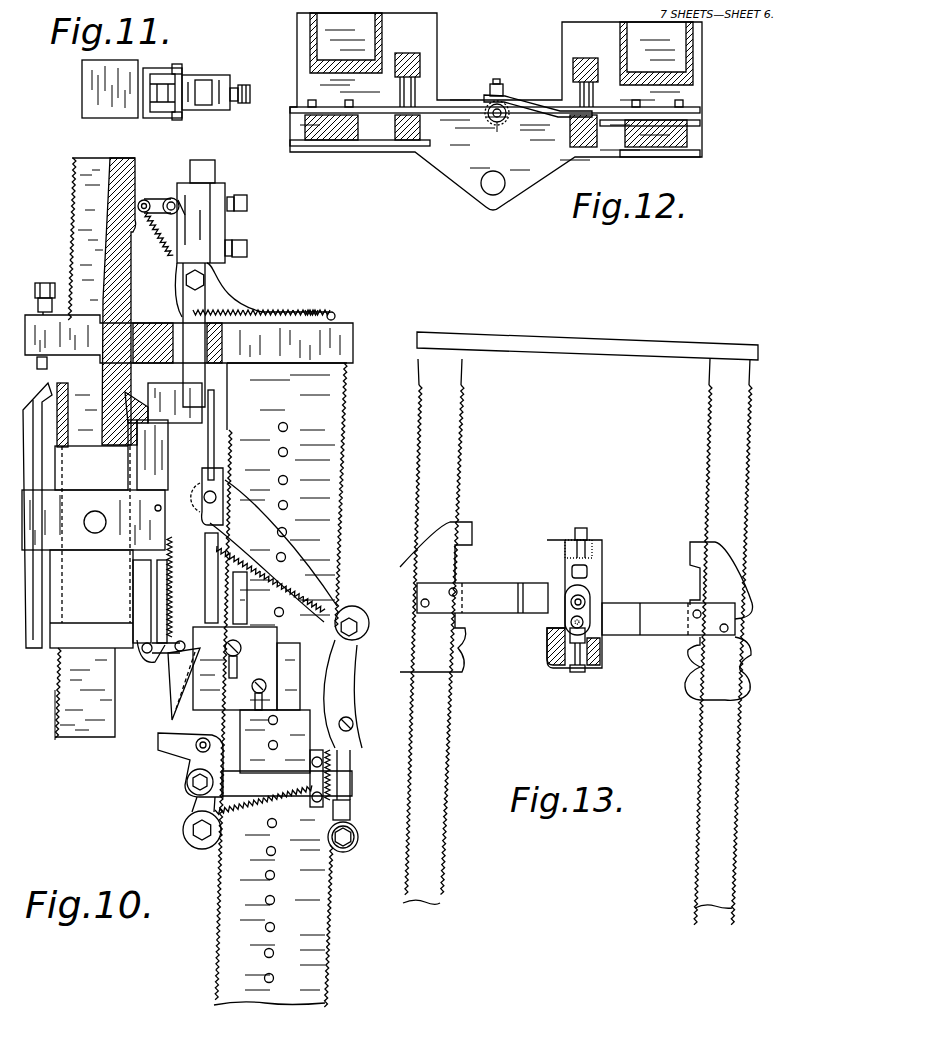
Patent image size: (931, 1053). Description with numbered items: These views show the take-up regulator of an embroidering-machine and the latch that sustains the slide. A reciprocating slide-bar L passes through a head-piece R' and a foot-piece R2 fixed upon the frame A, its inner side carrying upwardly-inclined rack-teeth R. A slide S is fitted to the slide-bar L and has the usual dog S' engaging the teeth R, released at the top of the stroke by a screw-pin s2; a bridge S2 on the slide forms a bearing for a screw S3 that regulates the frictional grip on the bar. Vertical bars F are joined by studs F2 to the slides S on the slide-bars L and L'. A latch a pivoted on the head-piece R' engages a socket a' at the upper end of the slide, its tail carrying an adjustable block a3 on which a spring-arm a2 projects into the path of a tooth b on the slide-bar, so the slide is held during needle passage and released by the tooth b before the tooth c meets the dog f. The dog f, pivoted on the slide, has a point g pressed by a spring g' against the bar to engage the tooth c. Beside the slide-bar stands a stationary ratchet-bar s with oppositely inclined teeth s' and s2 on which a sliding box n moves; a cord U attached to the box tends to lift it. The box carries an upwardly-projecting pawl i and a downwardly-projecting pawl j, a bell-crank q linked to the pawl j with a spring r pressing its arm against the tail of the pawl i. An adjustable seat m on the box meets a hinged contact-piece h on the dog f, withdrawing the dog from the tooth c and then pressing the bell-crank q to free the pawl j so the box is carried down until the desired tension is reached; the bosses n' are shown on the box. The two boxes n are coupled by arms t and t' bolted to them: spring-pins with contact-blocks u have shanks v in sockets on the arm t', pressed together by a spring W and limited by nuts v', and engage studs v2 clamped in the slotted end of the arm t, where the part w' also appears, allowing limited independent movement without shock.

In FIG. 11, the slide-bar L is at (93, 89).
In FIG. 12, the slide-bar L is at (606, 135).
In FIG. 10, the slide-bar L is at (95, 467).
In FIG. 11, the adjustable block a3 is at (208, 77).
In FIG. 10, the adjustable block a3 is at (198, 200).
In FIG. 10, the spring-arm a2 is at (150, 198).
In FIG. 10, the latch a is at (255, 335).
In FIG. 10, the socket a' is at (175, 393).
In FIG. 10, the tooth b is at (136, 228).
In FIG. 10, the tooth c is at (136, 393).
In FIG. 13, the rack-teeth R is at (604, 350).
In FIG. 10, the rack-teeth R is at (33, 714).
In FIG. 10, the head-piece R' is at (191, 324).
In FIG. 12, the foot-piece R2 is at (447, 175).
In FIG. 12, the frame A is at (310, 57).
In FIG. 12, the vertical bar F is at (582, 68).
In FIG. 12, the stud F2 is at (418, 88).
In FIG. 12, the arm t is at (538, 92).
In FIG. 13, the arm t is at (668, 601).
In FIG. 12, the arm t' is at (495, 136).
In FIG. 13, the arm t' is at (482, 580).
In FIG. 12, the contact-block u is at (507, 124).
In FIG. 13, the contact-block u is at (582, 568).
In FIG. 12, the shank v is at (493, 138).
In FIG. 13, the shank v is at (560, 664).
In FIG. 13, the nut v' is at (596, 685).
In FIG. 12, the stud v2 is at (493, 100).
In FIG. 13, the stud v2 is at (568, 620).
In FIG. 13, the slot w' is at (599, 602).
In FIG. 13, the spring W is at (602, 660).
In FIG. 12, the slide-bar L' is at (362, 155).
In FIG. 13, the ratchet-bar s is at (577, 642).
In FIG. 10, the ratchet-bar s is at (280, 684).
In FIG. 10, the teeth s' is at (347, 685).
In FIG. 10, the teeth s2 is at (42, 283).
In FIG. 10, the slide S is at (91, 599).
In FIG. 10, the dog S' is at (30, 531).
In FIG. 10, the bridge S2 is at (93, 540).
In FIG. 10, the screw S3 is at (97, 510).
In FIG. 10, the dog f is at (162, 443).
In FIG. 10, the cord U is at (215, 412).
In FIG. 13, the sliding box n is at (588, 602).
In FIG. 10, the sliding box n is at (283, 719).
In FIG. 10, the clamp arm n' is at (262, 658).
In FIG. 10, the pawl j is at (347, 805).
In FIG. 10, the contact-piece h is at (160, 668).
In FIG. 10, the adjustable seat m is at (192, 650).
In FIG. 10, the pawl i is at (212, 565).
In FIG. 10, the point g is at (229, 590).
In FIG. 10, the spring g' is at (287, 783).
In FIG. 10, the bell-crank q is at (182, 745).
In FIG. 10, the spring r is at (260, 800).